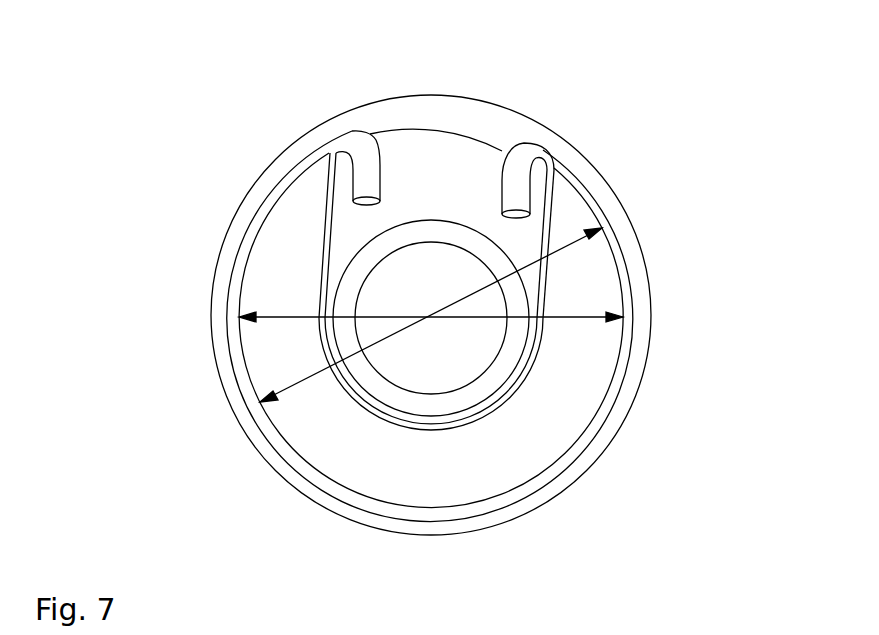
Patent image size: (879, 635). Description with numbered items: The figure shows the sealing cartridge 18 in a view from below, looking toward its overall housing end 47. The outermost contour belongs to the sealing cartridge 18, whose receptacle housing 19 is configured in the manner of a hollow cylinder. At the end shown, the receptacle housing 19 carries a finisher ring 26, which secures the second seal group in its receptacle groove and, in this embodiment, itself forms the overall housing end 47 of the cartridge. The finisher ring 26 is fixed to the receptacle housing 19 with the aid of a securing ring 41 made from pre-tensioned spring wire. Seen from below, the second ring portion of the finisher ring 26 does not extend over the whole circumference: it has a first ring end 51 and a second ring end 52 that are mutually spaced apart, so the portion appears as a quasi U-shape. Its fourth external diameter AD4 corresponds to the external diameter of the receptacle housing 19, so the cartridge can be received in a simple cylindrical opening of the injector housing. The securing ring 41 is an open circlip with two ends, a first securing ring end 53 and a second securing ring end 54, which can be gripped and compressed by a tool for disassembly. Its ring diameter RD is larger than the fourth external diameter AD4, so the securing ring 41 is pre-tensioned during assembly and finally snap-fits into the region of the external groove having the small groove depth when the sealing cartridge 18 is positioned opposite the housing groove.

The sealing cartridge 18 is at (660, 186).
The receptacle housing 19 is at (529, 132).
The securing ring 41 is at (622, 277).
The finisher ring 26 is at (594, 302).
The overall housing end 47 is at (588, 362).
The second ring end 52 is at (330, 185).
The first ring end 51 is at (550, 200).
The second securing ring end 54 is at (363, 201).
The first securing ring end 53 is at (514, 214).
The ring diameter RD is at (580, 318).
The fourth external diameter AD4 is at (300, 382).